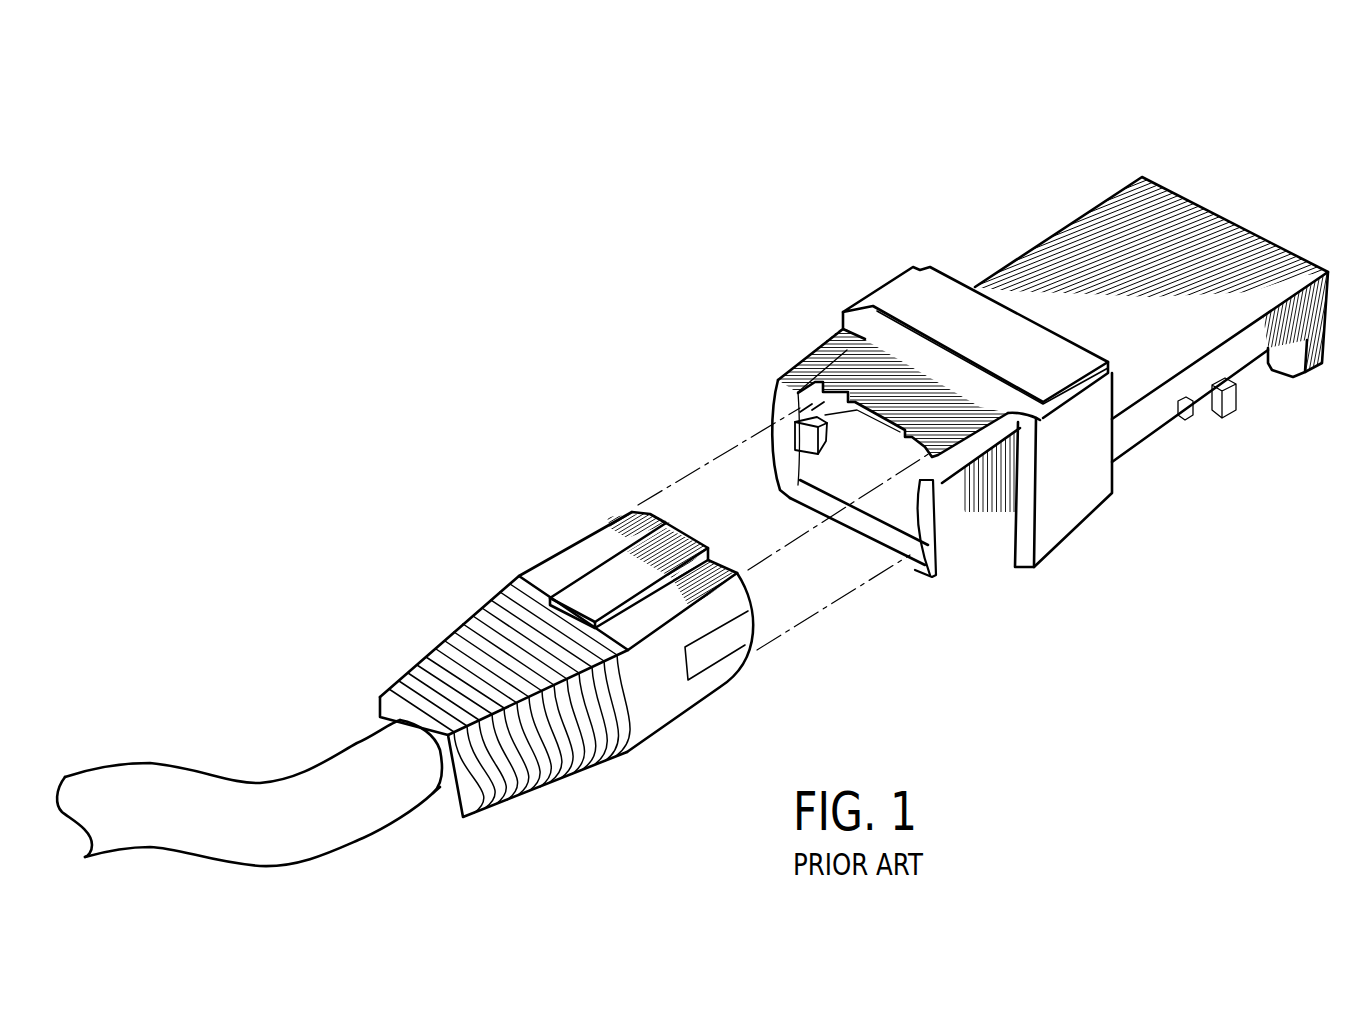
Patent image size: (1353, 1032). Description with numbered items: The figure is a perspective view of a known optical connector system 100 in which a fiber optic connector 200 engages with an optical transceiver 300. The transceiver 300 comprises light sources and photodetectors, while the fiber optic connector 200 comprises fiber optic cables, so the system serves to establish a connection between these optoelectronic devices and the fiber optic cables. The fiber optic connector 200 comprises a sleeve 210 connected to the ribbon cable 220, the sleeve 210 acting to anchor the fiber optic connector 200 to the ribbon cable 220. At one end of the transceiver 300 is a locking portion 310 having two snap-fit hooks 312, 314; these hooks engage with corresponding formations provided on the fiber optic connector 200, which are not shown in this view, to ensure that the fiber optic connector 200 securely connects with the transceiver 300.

The optical connector system 100 is at (772, 262).
The fiber optic connector 200 is at (527, 525).
The sleeve 210 is at (660, 677).
The ribbon cable 220 is at (362, 817).
The optical transceiver 300 is at (1225, 182).
The locking portion 310 is at (953, 540).
The snap-fit hook 312 is at (907, 517).
The snap-fit hook 314 is at (788, 432).